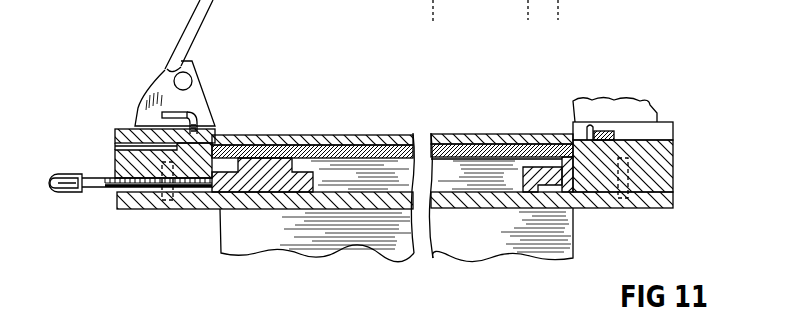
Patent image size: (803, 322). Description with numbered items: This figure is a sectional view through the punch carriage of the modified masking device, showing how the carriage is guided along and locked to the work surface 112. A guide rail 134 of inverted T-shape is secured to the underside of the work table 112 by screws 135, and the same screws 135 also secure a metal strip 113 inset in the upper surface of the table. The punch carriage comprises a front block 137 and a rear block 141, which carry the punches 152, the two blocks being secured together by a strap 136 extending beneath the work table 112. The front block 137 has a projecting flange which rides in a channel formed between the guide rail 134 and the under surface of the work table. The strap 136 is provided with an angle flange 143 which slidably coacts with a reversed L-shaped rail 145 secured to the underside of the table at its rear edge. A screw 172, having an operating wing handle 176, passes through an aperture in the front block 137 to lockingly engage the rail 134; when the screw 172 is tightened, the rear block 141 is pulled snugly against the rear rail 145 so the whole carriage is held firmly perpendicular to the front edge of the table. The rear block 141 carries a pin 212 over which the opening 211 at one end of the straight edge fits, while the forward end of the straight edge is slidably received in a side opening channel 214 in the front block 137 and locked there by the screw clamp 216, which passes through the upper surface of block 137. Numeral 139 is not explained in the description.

The punches 152 is at (195, 34).
The side opening channel 214 is at (115, 128).
The screw clamp 216 is at (186, 113).
The front block 137 is at (124, 158).
The operating wing handle 176 is at (60, 190).
The screw 172 is at (104, 190).
The fastener 139 is at (164, 206).
The strap 136 is at (197, 209).
The guide rail 134 is at (307, 193).
The metal strip 113 is at (278, 148).
The screws 135 is at (325, 134).
The work surface 112 is at (503, 147).
The pin 212 is at (598, 126).
The opening 211 is at (602, 134).
The rear block 141 is at (675, 152).
The angle flange 143 is at (522, 176).
The reversed L-shaped rail 145 is at (567, 192).